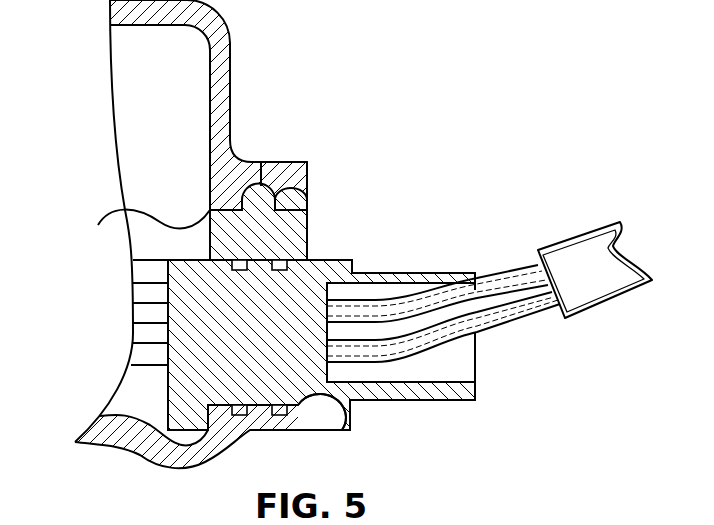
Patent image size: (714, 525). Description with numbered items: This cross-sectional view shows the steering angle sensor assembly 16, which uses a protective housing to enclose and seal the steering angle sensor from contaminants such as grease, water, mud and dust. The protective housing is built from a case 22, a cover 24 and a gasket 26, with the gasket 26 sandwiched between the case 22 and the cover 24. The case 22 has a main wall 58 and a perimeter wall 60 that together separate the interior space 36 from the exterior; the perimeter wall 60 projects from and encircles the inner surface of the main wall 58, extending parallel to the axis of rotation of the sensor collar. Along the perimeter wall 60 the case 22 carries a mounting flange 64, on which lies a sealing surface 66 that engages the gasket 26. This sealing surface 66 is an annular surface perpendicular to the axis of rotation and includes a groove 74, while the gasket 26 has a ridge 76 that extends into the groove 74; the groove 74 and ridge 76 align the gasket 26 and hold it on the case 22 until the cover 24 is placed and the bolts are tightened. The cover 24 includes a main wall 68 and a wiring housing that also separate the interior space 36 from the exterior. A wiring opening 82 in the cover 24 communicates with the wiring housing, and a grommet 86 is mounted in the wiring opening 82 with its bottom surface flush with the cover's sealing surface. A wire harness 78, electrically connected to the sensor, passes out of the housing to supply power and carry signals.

The steering angle sensor assembly 16 is at (522, 138).
The case 22 is at (231, 65).
The cover 24 is at (113, 447).
The gasket 26 is at (309, 243).
The interior space 36 is at (148, 82).
The main wall 58 is at (112, 22).
The perimeter wall 60 is at (229, 97).
The mounting flange 64 is at (298, 178).
The sealing surface 66 is at (139, 227).
The main wall 68 is at (147, 452).
The groove 74 is at (262, 181).
The ridge 76 is at (307, 197).
The wire harness 78 is at (590, 298).
The wiring opening 82 is at (333, 428).
The grommet 86 is at (478, 396).